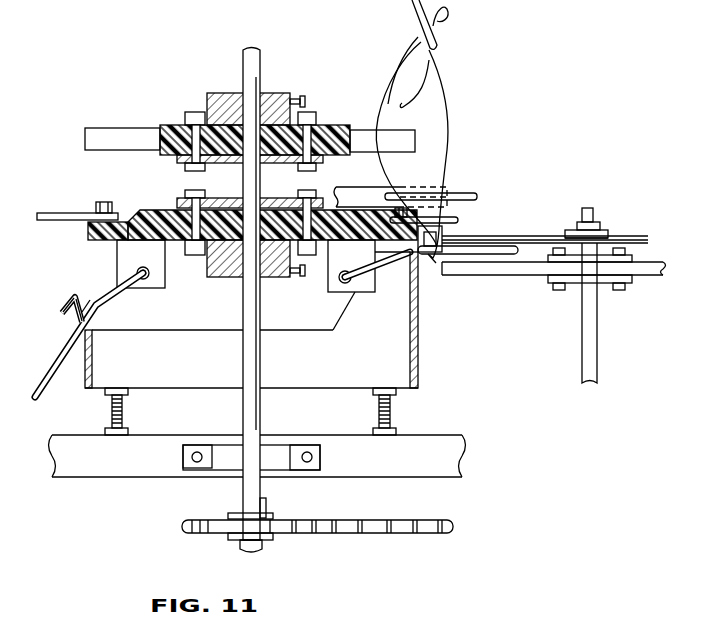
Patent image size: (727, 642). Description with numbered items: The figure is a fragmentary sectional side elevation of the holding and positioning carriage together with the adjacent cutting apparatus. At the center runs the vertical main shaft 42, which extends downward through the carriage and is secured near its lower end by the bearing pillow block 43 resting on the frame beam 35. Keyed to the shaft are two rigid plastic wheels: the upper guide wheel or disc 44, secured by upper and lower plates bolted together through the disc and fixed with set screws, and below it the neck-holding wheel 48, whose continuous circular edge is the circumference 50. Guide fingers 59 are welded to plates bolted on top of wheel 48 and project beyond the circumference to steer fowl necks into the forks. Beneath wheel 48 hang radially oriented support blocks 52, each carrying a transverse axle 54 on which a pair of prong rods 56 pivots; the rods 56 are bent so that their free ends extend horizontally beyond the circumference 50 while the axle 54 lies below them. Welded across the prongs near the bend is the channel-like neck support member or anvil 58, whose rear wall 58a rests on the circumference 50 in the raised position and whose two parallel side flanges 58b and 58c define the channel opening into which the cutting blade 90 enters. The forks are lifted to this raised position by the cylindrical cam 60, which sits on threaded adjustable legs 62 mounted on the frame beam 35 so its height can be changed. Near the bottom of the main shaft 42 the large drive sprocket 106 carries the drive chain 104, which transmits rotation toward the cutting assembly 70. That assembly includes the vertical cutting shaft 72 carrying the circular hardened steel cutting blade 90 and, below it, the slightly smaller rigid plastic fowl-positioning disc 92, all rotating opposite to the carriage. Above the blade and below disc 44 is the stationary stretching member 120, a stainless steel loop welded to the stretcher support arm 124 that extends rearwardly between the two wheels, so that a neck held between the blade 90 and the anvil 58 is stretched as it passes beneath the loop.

The main shaft 42 is at (246, 66).
The upper guide wheel or disc 44 is at (115, 130).
The neck-holding wheel 48 is at (158, 210).
The circumference 50 is at (88, 232).
The guide fingers 59 is at (62, 213).
The neck support member or anvil 58 is at (60, 299).
The rear wall 58a is at (92, 302).
The side flange 58b is at (62, 308).
The side flange 58c is at (77, 318).
The prong rods 56 is at (50, 372).
The axle 54 is at (145, 281).
The support blocks 52 is at (167, 272).
The cam 60 is at (290, 320).
The adjustable legs 62 is at (124, 414).
The frame beam 35 is at (93, 462).
The bearing pillow block 43 is at (284, 462).
The drive sprocket 106 is at (210, 520).
The drive chain 104 is at (346, 533).
The stretcher support arm 124 is at (423, 190).
The stretching member 120 is at (434, 175).
The rotating cutting assembly 70 is at (620, 189).
The cutting blade 90 is at (620, 237).
The fowl-positioning disc 92 is at (540, 275).
The cutting shaft 72 is at (598, 348).